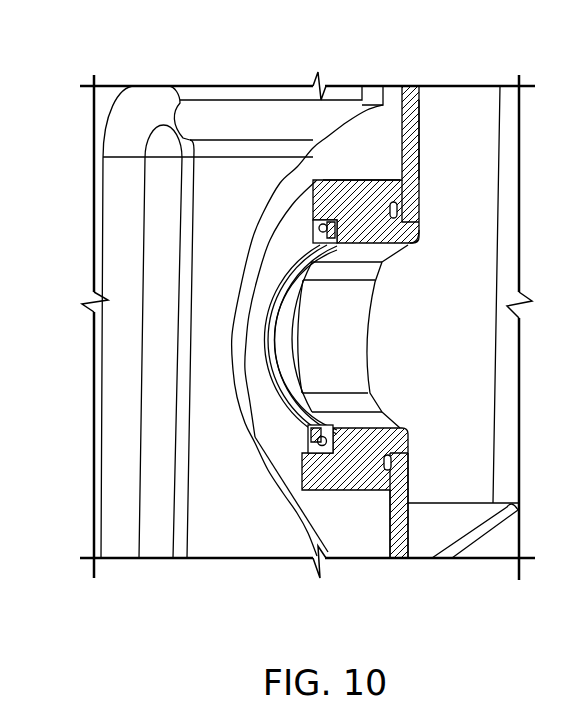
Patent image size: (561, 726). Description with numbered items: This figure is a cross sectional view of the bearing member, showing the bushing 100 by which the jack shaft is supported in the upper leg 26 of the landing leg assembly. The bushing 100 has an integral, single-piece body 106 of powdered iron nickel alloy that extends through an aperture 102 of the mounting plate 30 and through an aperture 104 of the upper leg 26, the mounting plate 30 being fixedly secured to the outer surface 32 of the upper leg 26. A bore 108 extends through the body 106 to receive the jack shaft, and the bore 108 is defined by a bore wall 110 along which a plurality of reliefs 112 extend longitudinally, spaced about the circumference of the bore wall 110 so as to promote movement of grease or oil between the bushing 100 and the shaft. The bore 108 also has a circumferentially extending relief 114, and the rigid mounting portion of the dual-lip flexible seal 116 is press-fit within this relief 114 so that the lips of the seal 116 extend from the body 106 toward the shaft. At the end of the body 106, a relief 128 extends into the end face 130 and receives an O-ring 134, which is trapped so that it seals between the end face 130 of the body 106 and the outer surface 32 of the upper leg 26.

The mounting plate 30 is at (143, 108).
The circumferentially extending relief 114 is at (323, 217).
The bushing 100 is at (350, 178).
The body 106 is at (377, 180).
The upper leg 26 is at (423, 117).
The relief 128 is at (422, 140).
The O-ring 134 is at (398, 204).
The end face 130 is at (418, 232).
The aperture 104 is at (400, 244).
The reliefs 112 is at (352, 270).
The bore 108 is at (366, 352).
The bore wall 110 is at (343, 383).
The seal 116 is at (246, 344).
The aperture 102 is at (298, 517).
The outer surface 32 is at (390, 522).